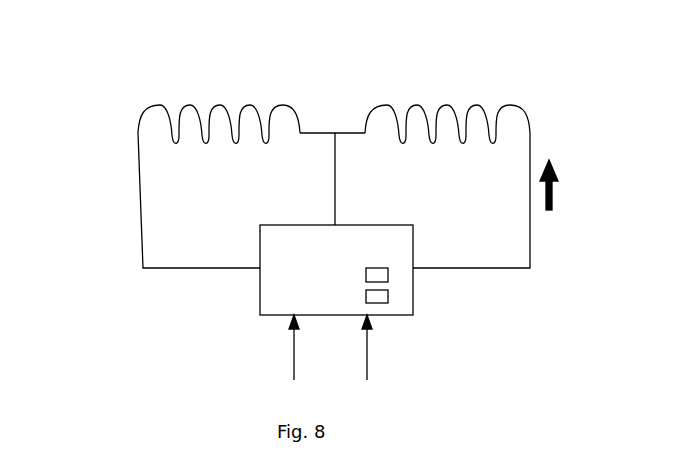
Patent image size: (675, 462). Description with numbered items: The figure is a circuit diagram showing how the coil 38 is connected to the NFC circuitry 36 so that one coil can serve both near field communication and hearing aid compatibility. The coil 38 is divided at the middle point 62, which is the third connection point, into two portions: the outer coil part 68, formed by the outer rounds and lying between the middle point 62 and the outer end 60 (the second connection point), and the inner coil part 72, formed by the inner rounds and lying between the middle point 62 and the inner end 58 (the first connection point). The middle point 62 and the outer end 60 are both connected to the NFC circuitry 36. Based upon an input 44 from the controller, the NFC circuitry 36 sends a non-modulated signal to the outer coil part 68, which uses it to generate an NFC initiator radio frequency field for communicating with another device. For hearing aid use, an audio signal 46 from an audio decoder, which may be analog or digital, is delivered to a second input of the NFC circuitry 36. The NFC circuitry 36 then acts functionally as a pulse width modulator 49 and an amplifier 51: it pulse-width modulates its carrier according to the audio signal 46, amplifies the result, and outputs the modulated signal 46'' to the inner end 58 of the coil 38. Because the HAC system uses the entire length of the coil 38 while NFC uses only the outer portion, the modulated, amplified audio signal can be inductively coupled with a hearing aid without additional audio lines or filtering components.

The outer end (second connection point) 60 is at (138, 133).
The outer coil part 68 is at (202, 110).
The middle point (third connection point) 62 is at (335, 133).
The coil 38 is at (512, 102).
The inner coil part 72 is at (463, 113).
The inner end (first connection point) 58 is at (530, 132).
The modulated signal 46'' is at (596, 203).
The NFC circuitry 36 is at (260, 290).
The pulse width modulator 49 is at (388, 274).
The amplifier 51 is at (388, 304).
The input from the controller 44 is at (294, 347).
The audio signal 46 is at (429, 359).